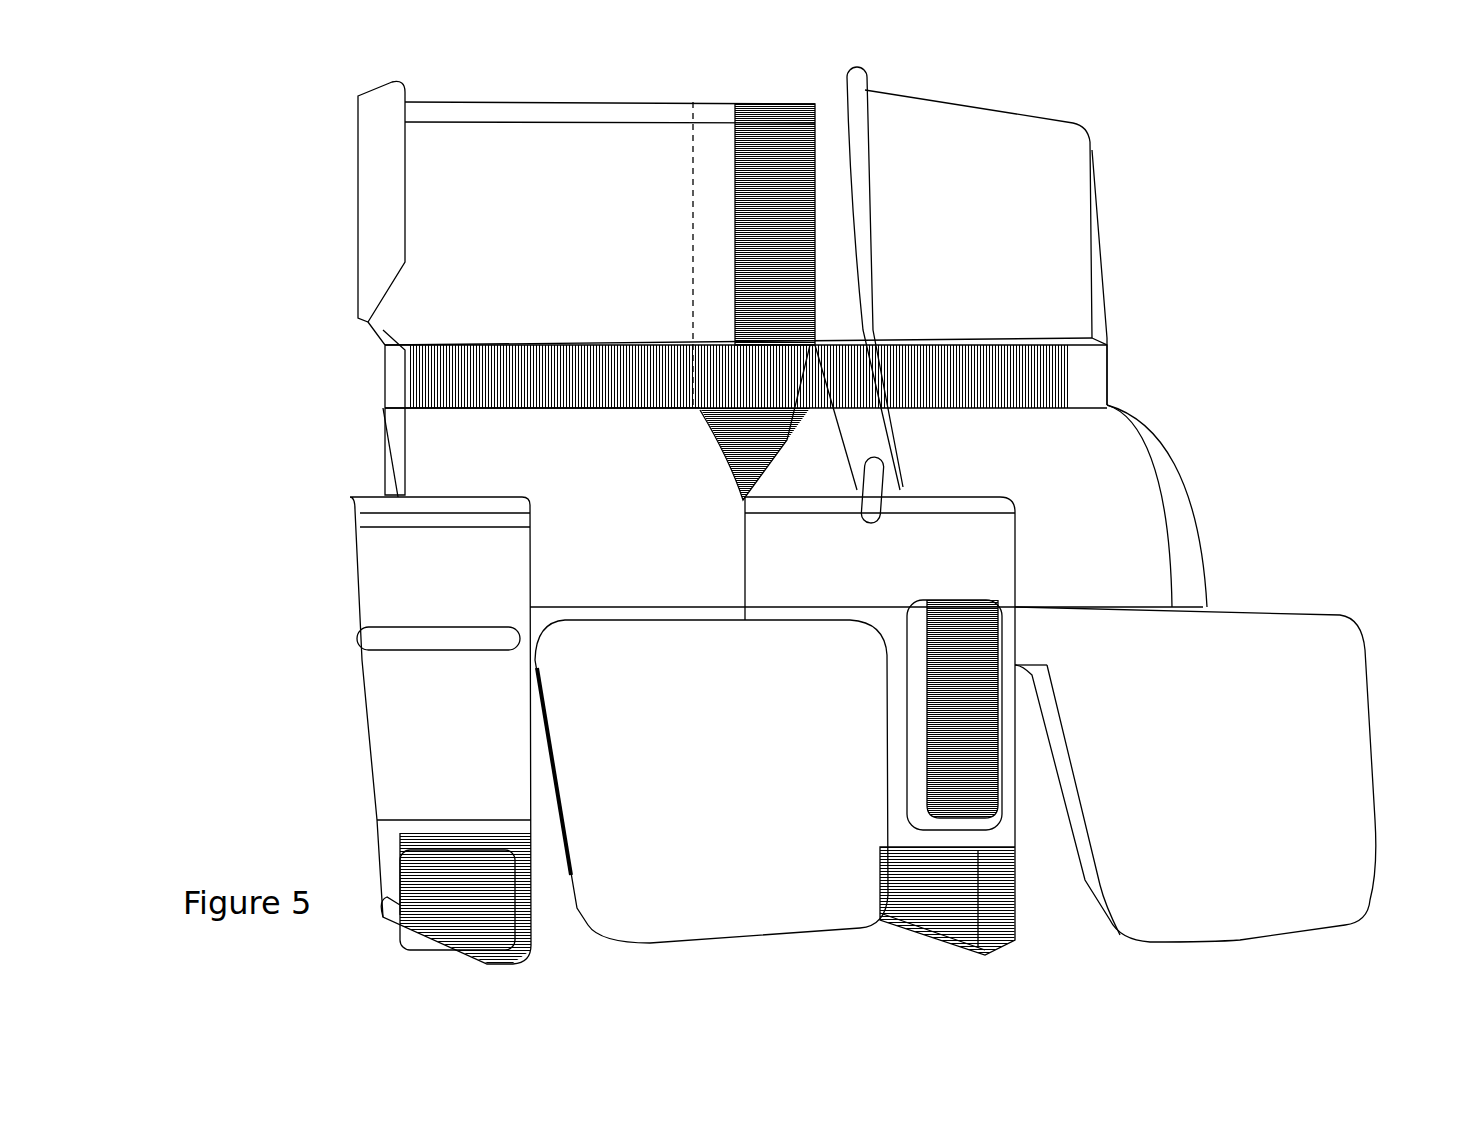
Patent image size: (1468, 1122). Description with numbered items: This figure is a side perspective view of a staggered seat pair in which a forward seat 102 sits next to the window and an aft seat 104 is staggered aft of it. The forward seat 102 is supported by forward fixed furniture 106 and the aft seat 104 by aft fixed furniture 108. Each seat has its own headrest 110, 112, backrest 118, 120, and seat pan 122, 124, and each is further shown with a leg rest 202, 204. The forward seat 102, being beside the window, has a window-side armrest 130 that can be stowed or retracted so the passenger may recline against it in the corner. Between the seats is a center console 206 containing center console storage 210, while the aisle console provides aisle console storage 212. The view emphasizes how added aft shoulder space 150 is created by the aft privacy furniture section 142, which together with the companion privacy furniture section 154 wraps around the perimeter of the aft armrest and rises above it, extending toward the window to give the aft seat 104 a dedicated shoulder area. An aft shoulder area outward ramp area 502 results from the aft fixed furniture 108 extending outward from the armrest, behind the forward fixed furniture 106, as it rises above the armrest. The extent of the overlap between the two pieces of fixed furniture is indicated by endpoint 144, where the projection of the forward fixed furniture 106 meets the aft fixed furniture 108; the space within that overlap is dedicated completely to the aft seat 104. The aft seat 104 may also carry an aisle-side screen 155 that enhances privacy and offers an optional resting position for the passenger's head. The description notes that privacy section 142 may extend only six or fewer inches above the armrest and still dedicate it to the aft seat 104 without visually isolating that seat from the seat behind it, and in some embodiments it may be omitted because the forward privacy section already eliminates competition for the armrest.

The seat 102 is at (1287, 172).
The seat 104 is at (186, 172).
The fixed furniture 106 is at (1095, 382).
The fixed furniture 108 is at (445, 388).
The headrest 110 is at (1088, 265).
The headrest 112 is at (623, 248).
The backrest 118 is at (1123, 478).
The backrest 120 is at (600, 478).
The seat pan 122 is at (1248, 603).
The seat pan 124 is at (640, 607).
The window-side armrest 130 is at (1190, 525).
The privacy furniture section 142 is at (847, 77).
The endpoint 144 is at (707, 110).
The shoulder space 150 is at (775, 224).
The privacy furniture section 154 is at (707, 153).
The aisle-side screen 155 is at (387, 137).
The leg rest 202 is at (1335, 735).
The leg rest 204 is at (660, 710).
The center console 206 is at (880, 726).
The center console storage 210 is at (954, 715).
The aisle console storage 212 is at (440, 730).
The aft shoulder area outward ramp area 502 is at (755, 422).